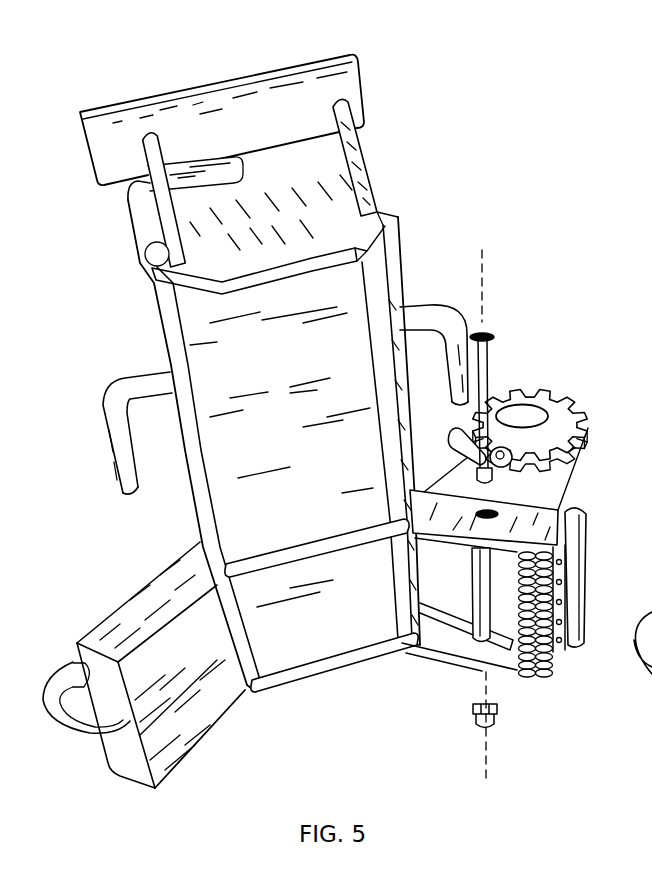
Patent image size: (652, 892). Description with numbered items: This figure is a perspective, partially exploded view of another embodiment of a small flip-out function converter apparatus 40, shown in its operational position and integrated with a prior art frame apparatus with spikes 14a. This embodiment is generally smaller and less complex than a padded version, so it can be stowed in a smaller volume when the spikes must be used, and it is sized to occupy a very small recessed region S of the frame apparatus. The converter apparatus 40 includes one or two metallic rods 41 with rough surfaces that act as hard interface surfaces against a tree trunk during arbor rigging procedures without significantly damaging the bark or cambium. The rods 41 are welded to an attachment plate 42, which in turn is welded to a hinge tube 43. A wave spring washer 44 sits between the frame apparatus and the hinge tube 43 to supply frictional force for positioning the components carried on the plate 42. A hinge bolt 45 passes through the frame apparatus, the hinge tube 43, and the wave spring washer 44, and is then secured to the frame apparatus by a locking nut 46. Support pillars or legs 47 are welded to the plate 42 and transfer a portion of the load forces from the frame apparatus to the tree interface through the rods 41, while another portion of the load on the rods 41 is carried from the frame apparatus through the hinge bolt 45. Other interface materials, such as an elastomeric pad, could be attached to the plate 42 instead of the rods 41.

The frame apparatus with spikes 14a is at (406, 205).
The recessed region S is at (436, 558).
The flip-out function converter apparatus 40 is at (450, 690).
The metallic rods 41 is at (547, 672).
The attachment plate 42 is at (465, 668).
The hinge tube 43 is at (477, 572).
The wave spring washer 44 is at (513, 638).
The hinge bolt 45 is at (488, 366).
The locking nut 46 is at (477, 733).
The support pillars 47 is at (588, 537).